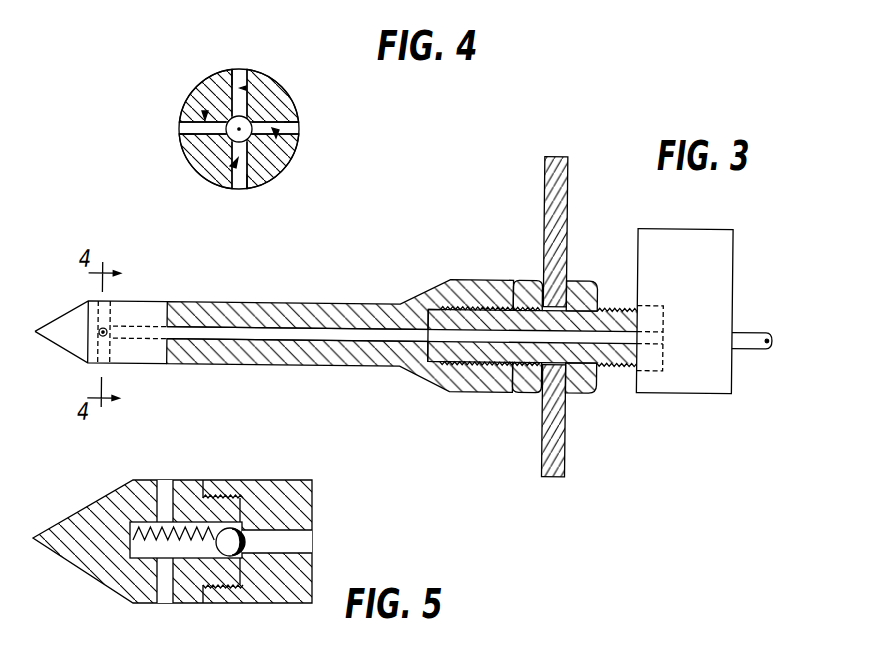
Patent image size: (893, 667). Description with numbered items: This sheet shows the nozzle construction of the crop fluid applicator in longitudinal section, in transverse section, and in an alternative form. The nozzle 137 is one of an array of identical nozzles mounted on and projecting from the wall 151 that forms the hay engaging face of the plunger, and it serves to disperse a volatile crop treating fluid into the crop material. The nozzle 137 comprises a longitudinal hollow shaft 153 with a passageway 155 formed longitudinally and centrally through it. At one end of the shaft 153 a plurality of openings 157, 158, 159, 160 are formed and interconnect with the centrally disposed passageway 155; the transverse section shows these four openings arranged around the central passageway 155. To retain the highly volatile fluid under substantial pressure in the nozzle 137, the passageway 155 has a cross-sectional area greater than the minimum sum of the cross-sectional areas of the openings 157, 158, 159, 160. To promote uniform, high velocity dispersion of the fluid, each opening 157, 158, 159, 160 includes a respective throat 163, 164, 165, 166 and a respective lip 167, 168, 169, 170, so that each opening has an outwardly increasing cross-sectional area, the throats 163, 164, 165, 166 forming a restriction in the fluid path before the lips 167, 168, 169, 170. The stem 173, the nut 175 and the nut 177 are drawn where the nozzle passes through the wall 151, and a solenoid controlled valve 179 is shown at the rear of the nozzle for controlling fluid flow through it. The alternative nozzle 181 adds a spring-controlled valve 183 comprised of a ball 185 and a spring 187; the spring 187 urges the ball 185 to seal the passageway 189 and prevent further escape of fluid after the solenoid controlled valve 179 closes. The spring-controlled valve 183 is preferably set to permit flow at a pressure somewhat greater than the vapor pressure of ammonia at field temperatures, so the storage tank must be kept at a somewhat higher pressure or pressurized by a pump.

In FIG. 3, the nozzle 137 is at (375, 288).
In FIG. 3, the wall 151 is at (543, 197).
In FIG. 3, the longitudinal hollow shaft 153 is at (222, 354).
In FIG. 3, the passageway 155 is at (313, 332).
In FIG. 4, the passageway 155 is at (246, 124).
In FIG. 4, the opening 157 is at (247, 88).
In FIG. 4, the opening 158 is at (298, 152).
In FIG. 4, the opening 159 is at (234, 164).
In FIG. 4, the opening 160 is at (204, 110).
In FIG. 4, the throat 163 is at (238, 72).
In FIG. 4, the throat 164 is at (297, 134).
In FIG. 4, the throat 165 is at (237, 192).
In FIG. 4, the throat 166 is at (183, 126).
In FIG. 4, the lip 167 is at (232, 68).
In FIG. 4, the lip 168 is at (298, 120).
In FIG. 4, the lip 169 is at (247, 190).
In FIG. 4, the lip 170 is at (183, 136).
In FIG. 3, the threaded stem 173 is at (611, 279).
In FIG. 3, the outer nut 175 is at (580, 376).
In FIG. 3, the inner nut 177 is at (530, 369).
In FIG. 3, the solenoid controlled valve 179 is at (702, 261).
In FIG. 5, the nozzle 181 is at (291, 474).
In FIG. 5, the spring-controlled valve 183 is at (192, 503).
In FIG. 5, the ball 185 is at (230, 557).
In FIG. 5, the spring 187 is at (128, 540).
In FIG. 5, the passageway 189 is at (292, 545).